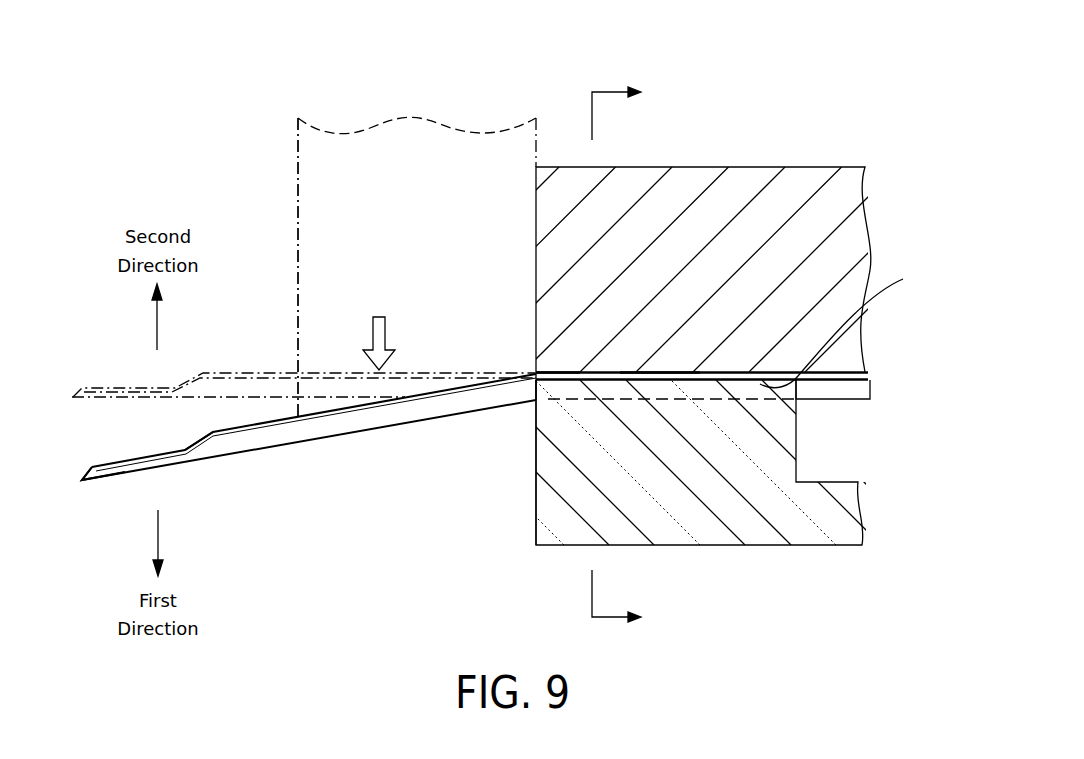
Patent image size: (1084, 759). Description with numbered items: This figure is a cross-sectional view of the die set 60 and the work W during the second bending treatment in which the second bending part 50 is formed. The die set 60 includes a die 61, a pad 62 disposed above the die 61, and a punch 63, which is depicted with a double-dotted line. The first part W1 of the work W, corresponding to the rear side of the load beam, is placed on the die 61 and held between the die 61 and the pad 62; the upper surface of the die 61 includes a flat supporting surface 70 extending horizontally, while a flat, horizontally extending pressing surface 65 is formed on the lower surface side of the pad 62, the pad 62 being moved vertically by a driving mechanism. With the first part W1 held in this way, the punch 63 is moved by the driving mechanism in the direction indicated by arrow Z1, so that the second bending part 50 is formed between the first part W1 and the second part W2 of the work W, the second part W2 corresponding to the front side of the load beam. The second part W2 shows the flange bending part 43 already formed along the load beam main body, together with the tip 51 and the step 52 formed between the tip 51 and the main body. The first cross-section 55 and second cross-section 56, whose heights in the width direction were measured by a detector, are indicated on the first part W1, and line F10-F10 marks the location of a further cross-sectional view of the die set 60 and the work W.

The die set 60 is at (529, 100).
The pad 62 is at (755, 176).
The die 61 is at (762, 549).
The punch 63 is at (297, 203).
The pressing surface 65 is at (844, 325).
The second cross-section 56 is at (552, 364).
The first cross-section 55 is at (660, 364).
The first part W1 is at (726, 374).
The work W is at (822, 382).
The second bending part 50 is at (534, 370).
The supporting surface 70 is at (600, 372).
The flange bending part 43 is at (343, 427).
The tip 51 is at (126, 460).
The step 52 is at (193, 443).
The second part W2 is at (253, 423).
The arrow Z1 is at (371, 332).
The line F10- F10 is at (638, 357).